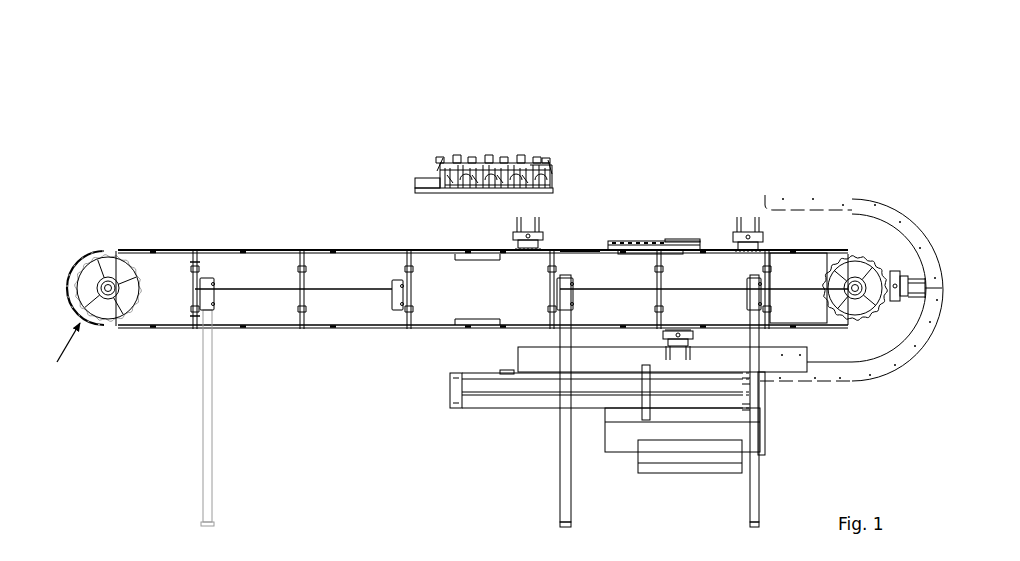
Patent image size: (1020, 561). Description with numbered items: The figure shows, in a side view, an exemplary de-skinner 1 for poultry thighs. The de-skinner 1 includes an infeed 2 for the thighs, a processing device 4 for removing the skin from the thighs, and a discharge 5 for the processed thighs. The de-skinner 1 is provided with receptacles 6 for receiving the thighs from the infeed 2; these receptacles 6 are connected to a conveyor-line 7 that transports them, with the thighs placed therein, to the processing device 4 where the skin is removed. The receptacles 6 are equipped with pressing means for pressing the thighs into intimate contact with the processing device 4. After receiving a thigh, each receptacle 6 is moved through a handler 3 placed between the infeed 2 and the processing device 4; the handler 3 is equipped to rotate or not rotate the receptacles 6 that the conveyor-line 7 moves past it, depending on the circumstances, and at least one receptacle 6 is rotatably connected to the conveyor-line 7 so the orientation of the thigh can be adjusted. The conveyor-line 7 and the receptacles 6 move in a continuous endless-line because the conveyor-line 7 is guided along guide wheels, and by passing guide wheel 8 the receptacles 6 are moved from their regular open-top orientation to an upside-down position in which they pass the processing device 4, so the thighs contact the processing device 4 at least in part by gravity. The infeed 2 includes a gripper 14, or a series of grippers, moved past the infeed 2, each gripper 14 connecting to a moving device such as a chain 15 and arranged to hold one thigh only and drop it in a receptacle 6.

The de-skinner 1 is at (223, 178).
The infeed 2 is at (500, 147).
The handler 3 is at (651, 238).
The processing device 4 is at (696, 382).
The discharge 5 is at (500, 383).
The receptacles 6 is at (510, 230).
The conveyor-line 7 is at (582, 248).
The guide wheel 8 is at (873, 253).
The gripper 14 is at (437, 157).
The chain 15 is at (549, 172).